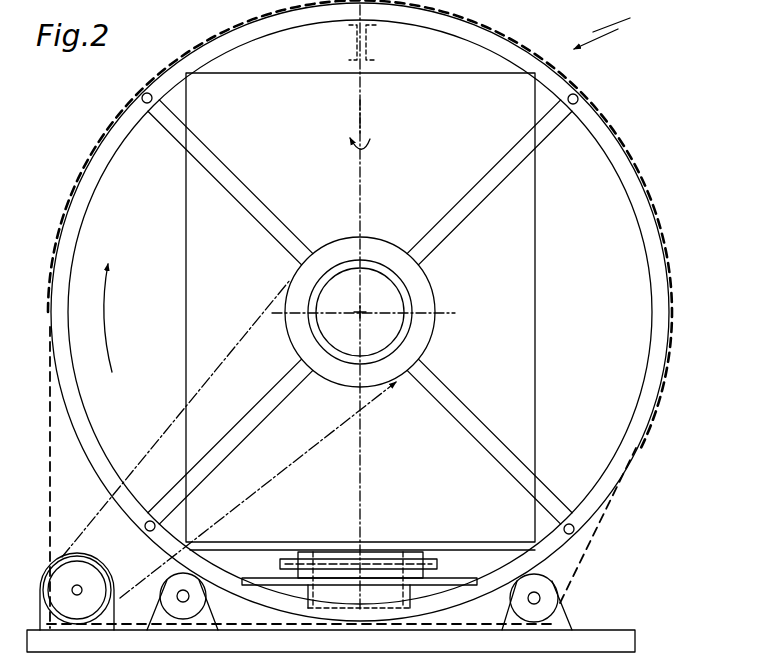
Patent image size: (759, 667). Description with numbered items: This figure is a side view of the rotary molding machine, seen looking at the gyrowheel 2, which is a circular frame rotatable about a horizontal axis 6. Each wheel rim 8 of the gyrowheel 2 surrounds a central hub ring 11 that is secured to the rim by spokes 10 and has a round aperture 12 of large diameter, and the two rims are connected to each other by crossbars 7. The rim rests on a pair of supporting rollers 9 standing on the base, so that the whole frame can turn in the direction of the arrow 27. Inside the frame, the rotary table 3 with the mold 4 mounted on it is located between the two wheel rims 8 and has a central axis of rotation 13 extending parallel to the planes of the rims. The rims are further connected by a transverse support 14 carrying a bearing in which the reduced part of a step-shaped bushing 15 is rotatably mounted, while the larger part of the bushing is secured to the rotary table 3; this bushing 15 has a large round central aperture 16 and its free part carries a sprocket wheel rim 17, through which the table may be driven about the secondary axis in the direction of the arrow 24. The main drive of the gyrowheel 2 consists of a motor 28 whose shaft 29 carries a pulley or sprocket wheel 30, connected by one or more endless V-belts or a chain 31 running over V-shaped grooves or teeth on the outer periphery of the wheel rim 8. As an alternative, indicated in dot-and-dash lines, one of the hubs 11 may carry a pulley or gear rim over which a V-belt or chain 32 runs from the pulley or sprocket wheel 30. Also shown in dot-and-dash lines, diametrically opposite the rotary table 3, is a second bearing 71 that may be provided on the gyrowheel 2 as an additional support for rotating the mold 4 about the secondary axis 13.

The gyrowheel 2 is at (608, 29).
The rotary table 3 is at (268, 547).
The mold 4 is at (434, 101).
The horizontal axis 6 is at (362, 312).
The crossbars 7 is at (578, 98).
The wheel rim 8 is at (594, 127).
The supporting rollers 9 is at (197, 575).
The spokes 10 is at (508, 172).
The hub ring 11 is at (428, 298).
The aperture 12 is at (390, 333).
The axis of rotation 13 is at (363, 128).
The transverse support 14 is at (452, 576).
The step-shaped bushing 15 is at (339, 569).
The central aperture 16 is at (378, 556).
The sprocket wheel rim 17 is at (311, 560).
The arrow 24 is at (348, 141).
The arrow 27 is at (112, 303).
The motor 28 is at (55, 557).
The shaft 29 is at (82, 588).
The pulley or sprocket wheel 30 is at (97, 585).
The V-belt or chain 31 is at (49, 446).
The V-belt or chain 32 is at (173, 422).
The second bearing 71 is at (372, 32).